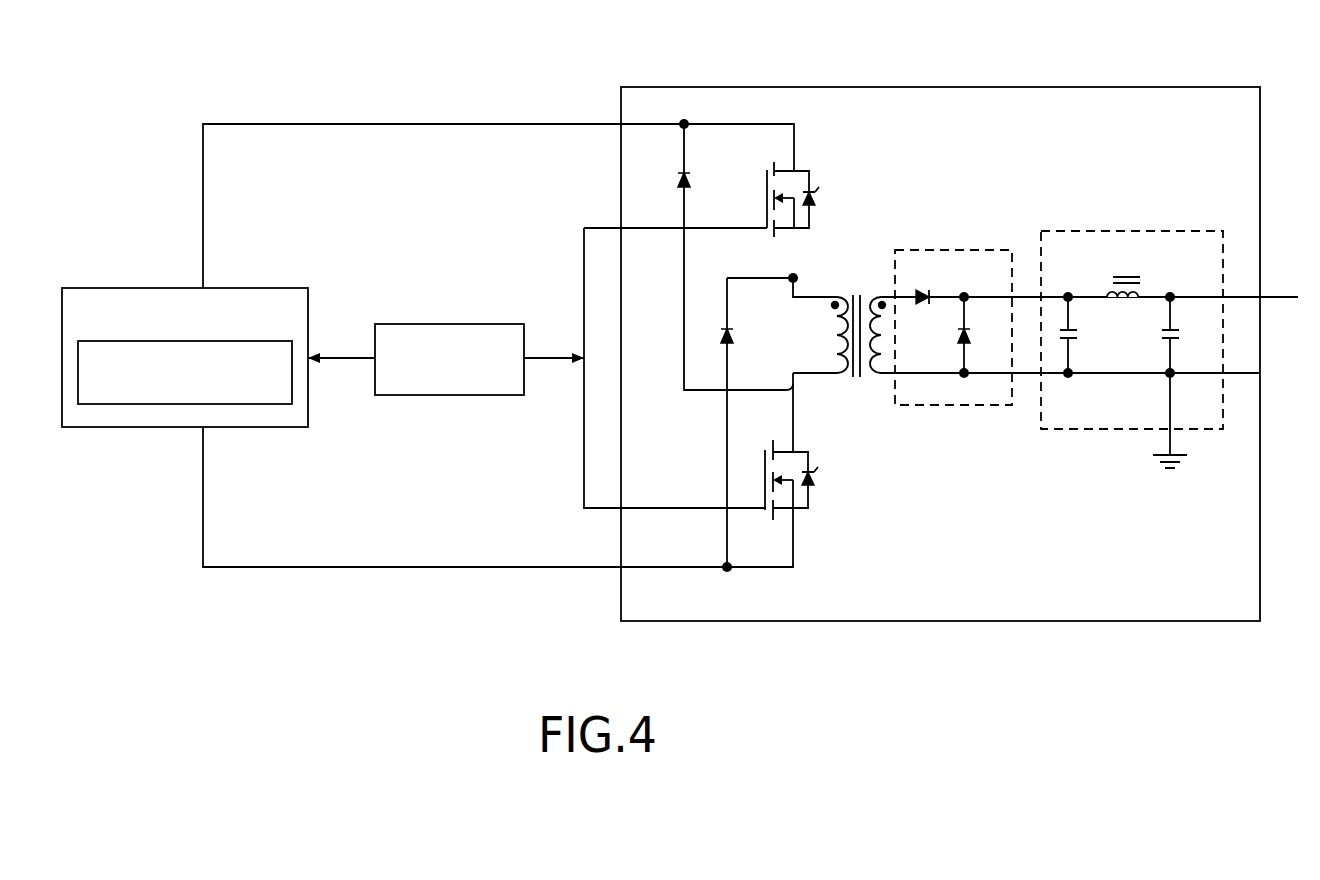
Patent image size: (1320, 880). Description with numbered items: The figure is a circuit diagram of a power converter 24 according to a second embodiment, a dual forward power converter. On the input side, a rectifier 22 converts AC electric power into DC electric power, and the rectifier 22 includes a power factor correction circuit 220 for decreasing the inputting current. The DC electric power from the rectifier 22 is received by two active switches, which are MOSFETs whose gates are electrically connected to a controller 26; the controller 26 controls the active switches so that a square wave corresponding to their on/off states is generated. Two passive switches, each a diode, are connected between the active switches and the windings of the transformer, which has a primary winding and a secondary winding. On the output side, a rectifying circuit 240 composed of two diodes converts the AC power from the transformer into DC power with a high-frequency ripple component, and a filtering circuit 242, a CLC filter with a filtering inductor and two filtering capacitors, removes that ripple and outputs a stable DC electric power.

The rectifier 22 is at (101, 308).
The power factor correction circuit 220 is at (123, 398).
The power converter 24 is at (877, 115).
The rectifying circuit 240 is at (965, 257).
The filtering circuit 242 is at (1072, 248).
The controller 26 is at (448, 333).